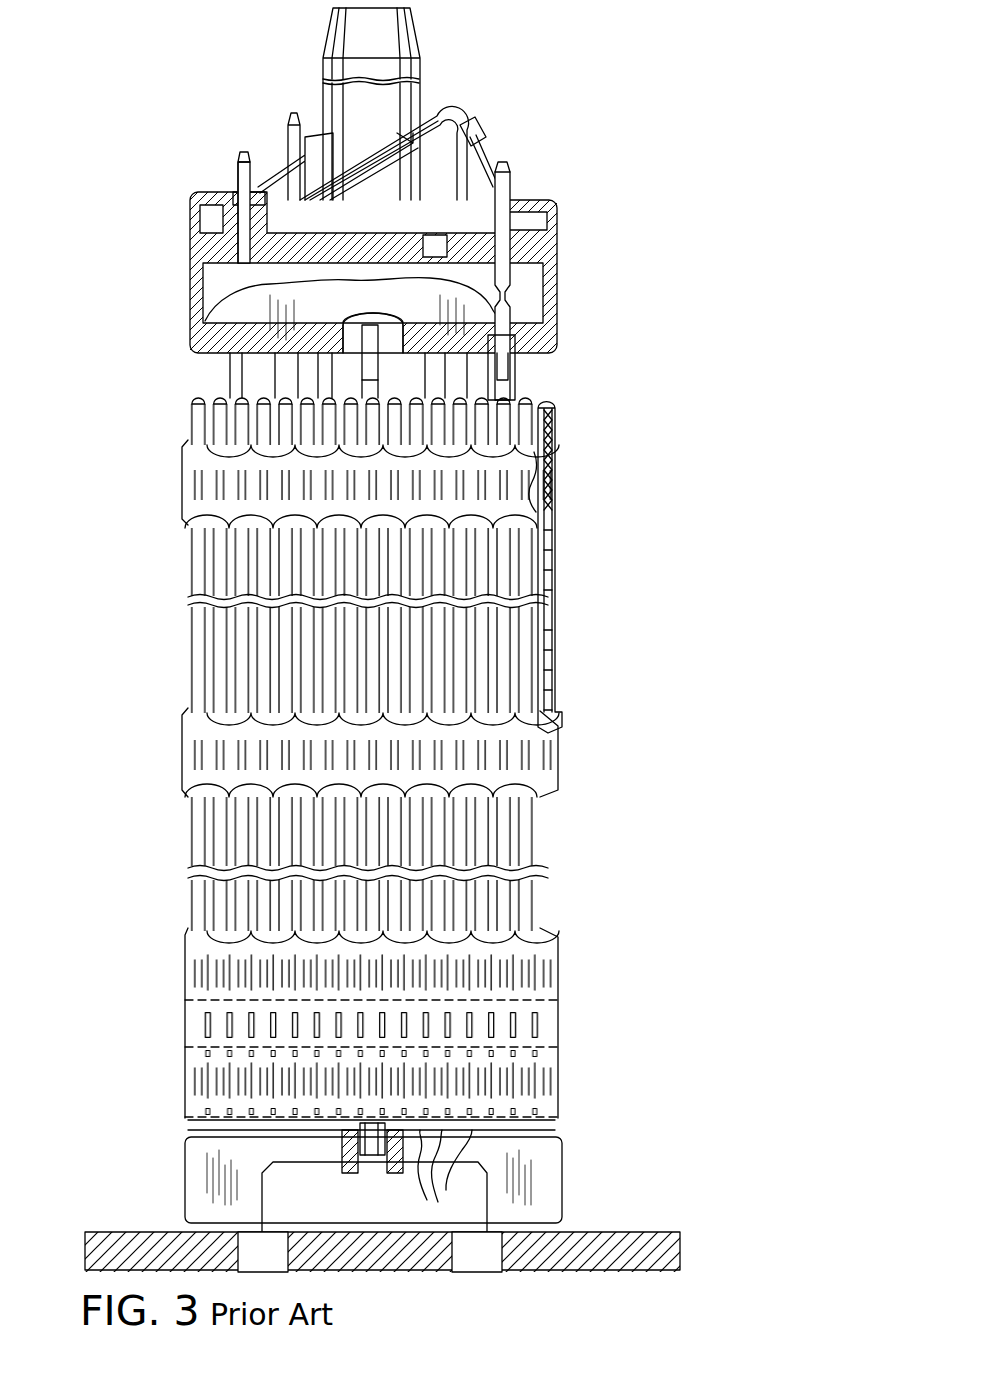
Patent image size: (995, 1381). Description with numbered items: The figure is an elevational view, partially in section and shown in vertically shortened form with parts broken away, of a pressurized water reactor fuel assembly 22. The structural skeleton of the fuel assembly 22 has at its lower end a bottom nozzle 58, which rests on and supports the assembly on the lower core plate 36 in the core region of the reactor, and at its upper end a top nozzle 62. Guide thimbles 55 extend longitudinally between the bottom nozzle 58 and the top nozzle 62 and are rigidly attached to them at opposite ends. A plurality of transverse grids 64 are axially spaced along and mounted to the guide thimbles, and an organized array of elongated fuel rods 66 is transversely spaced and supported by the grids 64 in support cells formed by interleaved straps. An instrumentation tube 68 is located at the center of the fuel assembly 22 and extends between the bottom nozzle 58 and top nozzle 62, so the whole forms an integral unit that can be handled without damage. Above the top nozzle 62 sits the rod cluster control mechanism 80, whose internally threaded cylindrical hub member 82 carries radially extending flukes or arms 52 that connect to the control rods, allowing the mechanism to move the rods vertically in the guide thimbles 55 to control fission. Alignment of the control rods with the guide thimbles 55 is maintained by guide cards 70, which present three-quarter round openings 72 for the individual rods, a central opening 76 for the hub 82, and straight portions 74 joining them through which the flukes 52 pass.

The fuel assembly 22 is at (642, 264).
The cylindrical hub member 82 is at (424, 100).
The rod cluster control mechanism 80 is at (466, 114).
The flukes or arms 52 is at (312, 135).
The top nozzle 62 is at (556, 247).
The guide thimbles 55 is at (230, 383).
The three-quarter round openings 72 is at (555, 407).
The central opening 76 is at (555, 473).
The guide cards 70 is at (548, 563).
The transverse grids 64 is at (185, 497).
The fuel rods 66 is at (187, 665).
The bottom nozzle 58 is at (563, 1178).
The instrumentation tube 68 is at (380, 1140).
The straight portions 74 is at (448, 1173).
The lower core plate 36 is at (605, 1232).